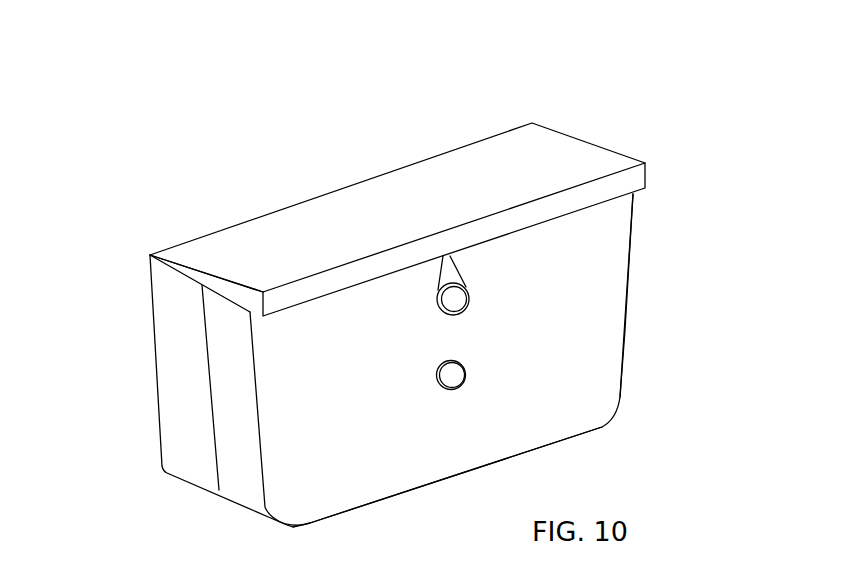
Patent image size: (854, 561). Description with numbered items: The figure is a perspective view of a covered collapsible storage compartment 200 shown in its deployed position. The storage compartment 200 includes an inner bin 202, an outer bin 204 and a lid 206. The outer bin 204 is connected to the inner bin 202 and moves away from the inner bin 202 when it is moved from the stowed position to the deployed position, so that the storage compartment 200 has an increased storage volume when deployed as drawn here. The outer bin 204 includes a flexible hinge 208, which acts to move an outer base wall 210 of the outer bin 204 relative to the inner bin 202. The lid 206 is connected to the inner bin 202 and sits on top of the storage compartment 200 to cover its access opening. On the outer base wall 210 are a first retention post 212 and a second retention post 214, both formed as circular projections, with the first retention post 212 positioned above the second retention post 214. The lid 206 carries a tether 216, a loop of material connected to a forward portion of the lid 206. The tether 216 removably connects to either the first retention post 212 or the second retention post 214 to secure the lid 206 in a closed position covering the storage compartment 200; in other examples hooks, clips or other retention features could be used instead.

The storage compartment 200 is at (128, 247).
The inner bin 202 is at (168, 433).
The outer bin 204 is at (383, 503).
The lid 206 is at (307, 218).
The flexible hinge 208 is at (250, 480).
The outer base wall 210 is at (605, 363).
The first retention post 212 is at (457, 297).
The second retention post 214 is at (455, 378).
The tether 216 is at (460, 267).